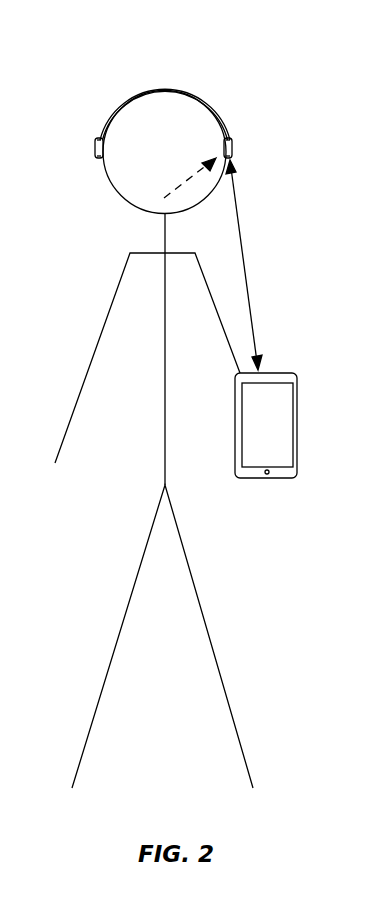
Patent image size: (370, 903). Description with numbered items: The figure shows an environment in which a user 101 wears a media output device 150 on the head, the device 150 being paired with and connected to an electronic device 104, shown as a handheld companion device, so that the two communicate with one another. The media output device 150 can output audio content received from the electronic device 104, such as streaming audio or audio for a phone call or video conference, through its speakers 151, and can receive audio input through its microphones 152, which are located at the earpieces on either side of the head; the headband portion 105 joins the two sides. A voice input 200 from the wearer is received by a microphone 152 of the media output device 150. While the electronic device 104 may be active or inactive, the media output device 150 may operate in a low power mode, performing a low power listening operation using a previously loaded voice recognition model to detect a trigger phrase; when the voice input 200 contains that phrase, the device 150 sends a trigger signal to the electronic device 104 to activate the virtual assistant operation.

The user 101 is at (128, 262).
The electronic device 104 is at (284, 368).
The headphones 105 is at (166, 88).
The media output device 150 is at (101, 138).
The speaker 151 is at (95, 145).
The microphone 152 is at (95, 155).
The voice input 200 is at (196, 175).